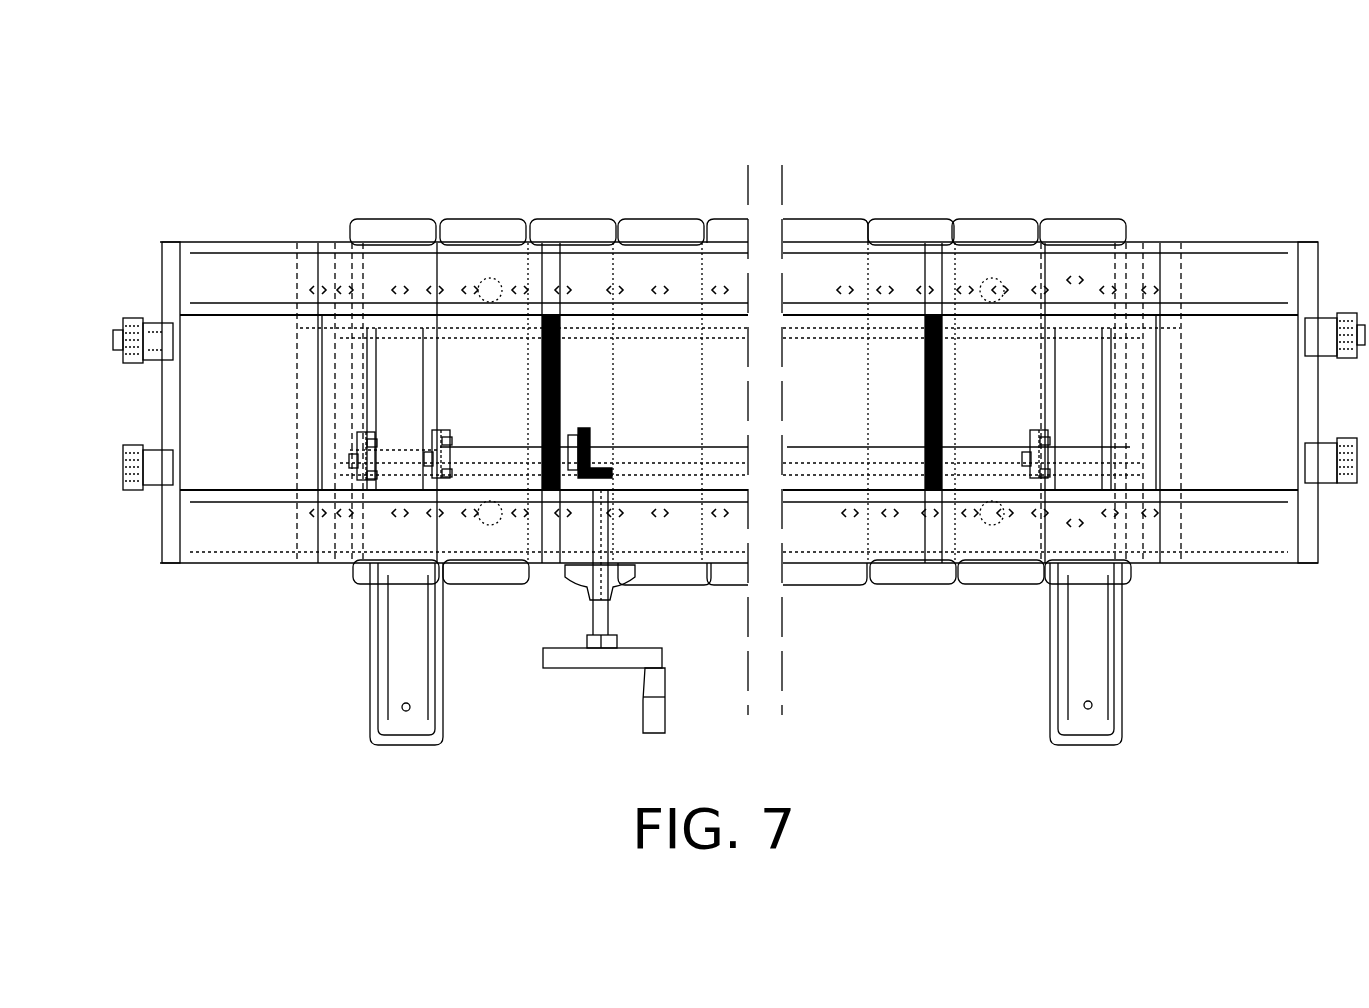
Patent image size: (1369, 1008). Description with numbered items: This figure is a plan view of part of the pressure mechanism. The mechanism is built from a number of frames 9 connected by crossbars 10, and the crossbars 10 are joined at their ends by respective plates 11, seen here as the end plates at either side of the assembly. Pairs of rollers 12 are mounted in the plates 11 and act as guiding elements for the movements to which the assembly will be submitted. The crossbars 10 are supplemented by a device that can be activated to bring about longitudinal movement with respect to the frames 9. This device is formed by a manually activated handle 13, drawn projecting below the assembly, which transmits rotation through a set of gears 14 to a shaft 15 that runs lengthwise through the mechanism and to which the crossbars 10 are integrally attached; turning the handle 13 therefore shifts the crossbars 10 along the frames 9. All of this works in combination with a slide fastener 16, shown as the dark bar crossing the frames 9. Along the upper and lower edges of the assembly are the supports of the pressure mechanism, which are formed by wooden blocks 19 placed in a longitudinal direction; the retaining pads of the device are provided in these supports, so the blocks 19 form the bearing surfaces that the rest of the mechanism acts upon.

The frame 9 is at (1256, 517).
The crossbar 10 is at (400, 667).
The plate 11 is at (172, 413).
The roller 12 is at (135, 315).
The handle 13 is at (653, 713).
The set of gears 14 is at (603, 467).
The shaft 15 is at (818, 450).
The slide fastener 16 is at (544, 315).
The wooden block 19 is at (1074, 228).